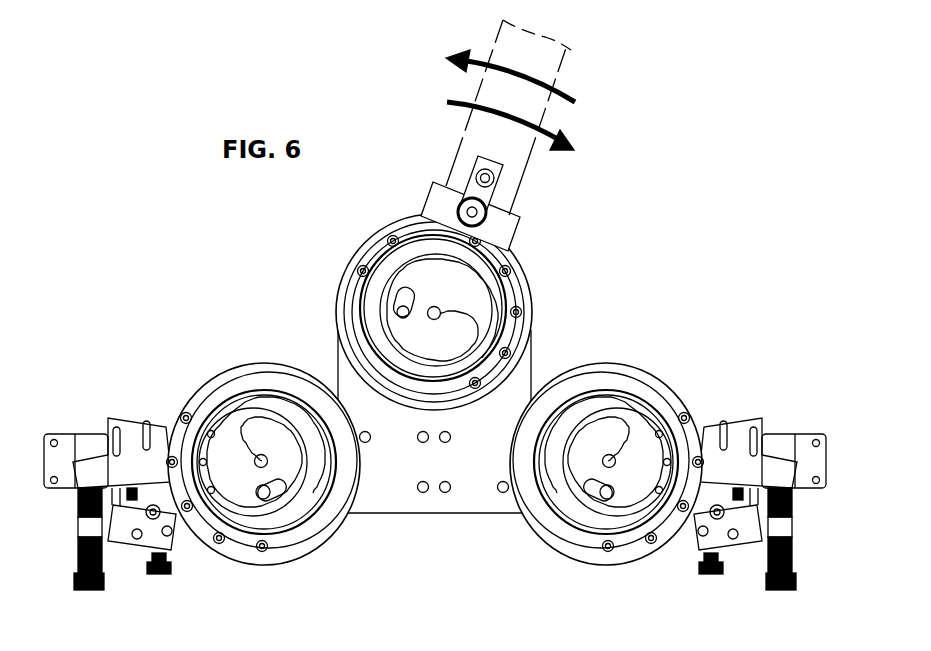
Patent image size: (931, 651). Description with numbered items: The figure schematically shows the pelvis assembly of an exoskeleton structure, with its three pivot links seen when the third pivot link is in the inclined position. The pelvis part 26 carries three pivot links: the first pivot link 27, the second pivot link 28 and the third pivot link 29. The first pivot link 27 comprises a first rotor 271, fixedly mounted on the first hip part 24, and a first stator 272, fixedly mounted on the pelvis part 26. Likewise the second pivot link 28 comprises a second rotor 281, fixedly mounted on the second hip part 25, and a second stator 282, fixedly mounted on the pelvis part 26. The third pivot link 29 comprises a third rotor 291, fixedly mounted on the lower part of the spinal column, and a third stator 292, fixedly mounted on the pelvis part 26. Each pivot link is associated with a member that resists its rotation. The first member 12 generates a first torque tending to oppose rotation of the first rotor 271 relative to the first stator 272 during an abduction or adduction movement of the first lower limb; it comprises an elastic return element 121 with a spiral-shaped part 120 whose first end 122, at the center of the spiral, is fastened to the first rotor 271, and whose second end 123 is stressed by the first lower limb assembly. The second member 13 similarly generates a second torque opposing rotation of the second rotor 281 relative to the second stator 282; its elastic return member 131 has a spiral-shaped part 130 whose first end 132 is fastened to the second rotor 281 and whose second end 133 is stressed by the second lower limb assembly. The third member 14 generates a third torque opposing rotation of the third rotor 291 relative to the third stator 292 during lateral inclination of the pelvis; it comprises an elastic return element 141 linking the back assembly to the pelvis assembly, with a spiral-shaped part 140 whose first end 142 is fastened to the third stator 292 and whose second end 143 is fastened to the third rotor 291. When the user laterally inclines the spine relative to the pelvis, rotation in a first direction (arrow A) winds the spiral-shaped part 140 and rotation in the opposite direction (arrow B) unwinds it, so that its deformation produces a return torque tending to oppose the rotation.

The first member 12 is at (660, 468).
The second member 13 is at (204, 468).
The third member 14 is at (436, 215).
The first hip part 24 is at (807, 468).
The second hip part 25 is at (63, 468).
The pelvis part 26 is at (433, 506).
The first pivot link 27 is at (704, 458).
The second pivot link 28 is at (165, 458).
The third pivot link 29 is at (533, 275).
The spiral-shaped part 120 is at (628, 555).
The elastic return element 121 is at (552, 532).
The first end 122 is at (611, 458).
The second end 123 is at (755, 468).
The spiral-shaped part 130 is at (242, 555).
The elastic return member 131 is at (318, 532).
The first end 132 is at (261, 458).
The second end 133 is at (115, 468).
The spiral-shaped part 140 is at (345, 292).
The elastic return element 141 is at (340, 316).
The first end 142 is at (442, 314).
The second end 143 is at (478, 212).
The first rotor 271 is at (684, 445).
The first stator 272 is at (665, 525).
The second rotor 281 is at (186, 445).
The second stator 282 is at (205, 525).
The third rotor 291 is at (397, 268).
The third stator 292 is at (524, 292).